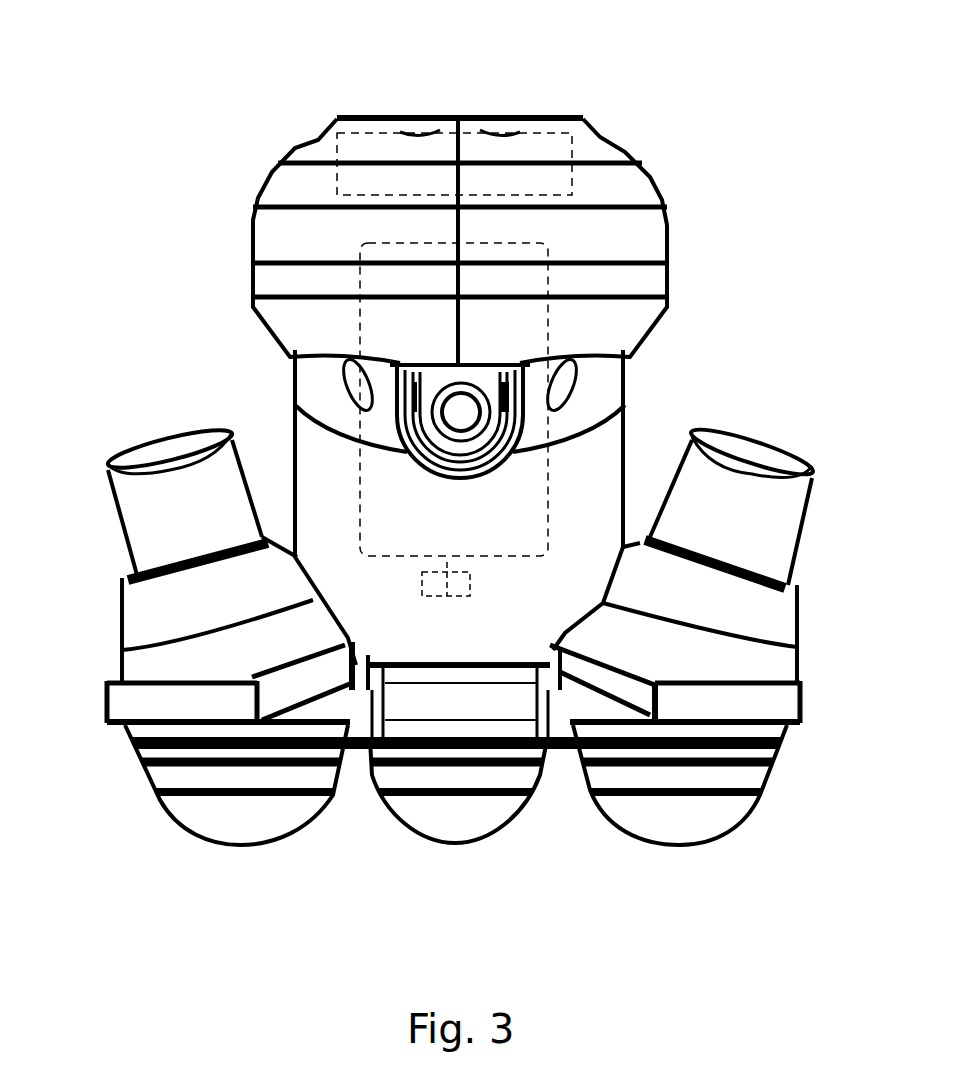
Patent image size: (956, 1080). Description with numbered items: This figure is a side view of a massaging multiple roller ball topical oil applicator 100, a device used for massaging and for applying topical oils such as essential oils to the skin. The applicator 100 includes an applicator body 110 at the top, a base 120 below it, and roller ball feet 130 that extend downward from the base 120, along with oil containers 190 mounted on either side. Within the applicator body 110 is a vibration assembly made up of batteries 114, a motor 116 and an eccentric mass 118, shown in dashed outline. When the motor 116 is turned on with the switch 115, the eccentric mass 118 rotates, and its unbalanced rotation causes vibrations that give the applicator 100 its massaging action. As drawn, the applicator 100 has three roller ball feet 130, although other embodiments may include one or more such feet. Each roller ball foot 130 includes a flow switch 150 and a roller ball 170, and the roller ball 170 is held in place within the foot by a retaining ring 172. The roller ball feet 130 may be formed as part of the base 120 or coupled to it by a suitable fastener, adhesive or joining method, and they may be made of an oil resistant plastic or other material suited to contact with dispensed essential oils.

The roller ball topical oil applicator 100 is at (272, 85).
The applicator body 110 is at (254, 323).
The batteries 114 is at (555, 128).
The motor 116 is at (548, 310).
The switch 115 is at (464, 410).
The eccentric mass 118 is at (438, 585).
The oil containers 190 is at (150, 452).
The roller ball feet 130 is at (122, 657).
The flow switch 150 is at (268, 698).
The retaining ring 172 is at (175, 772).
The base 120 is at (397, 700).
The roller ball 170 is at (675, 828).